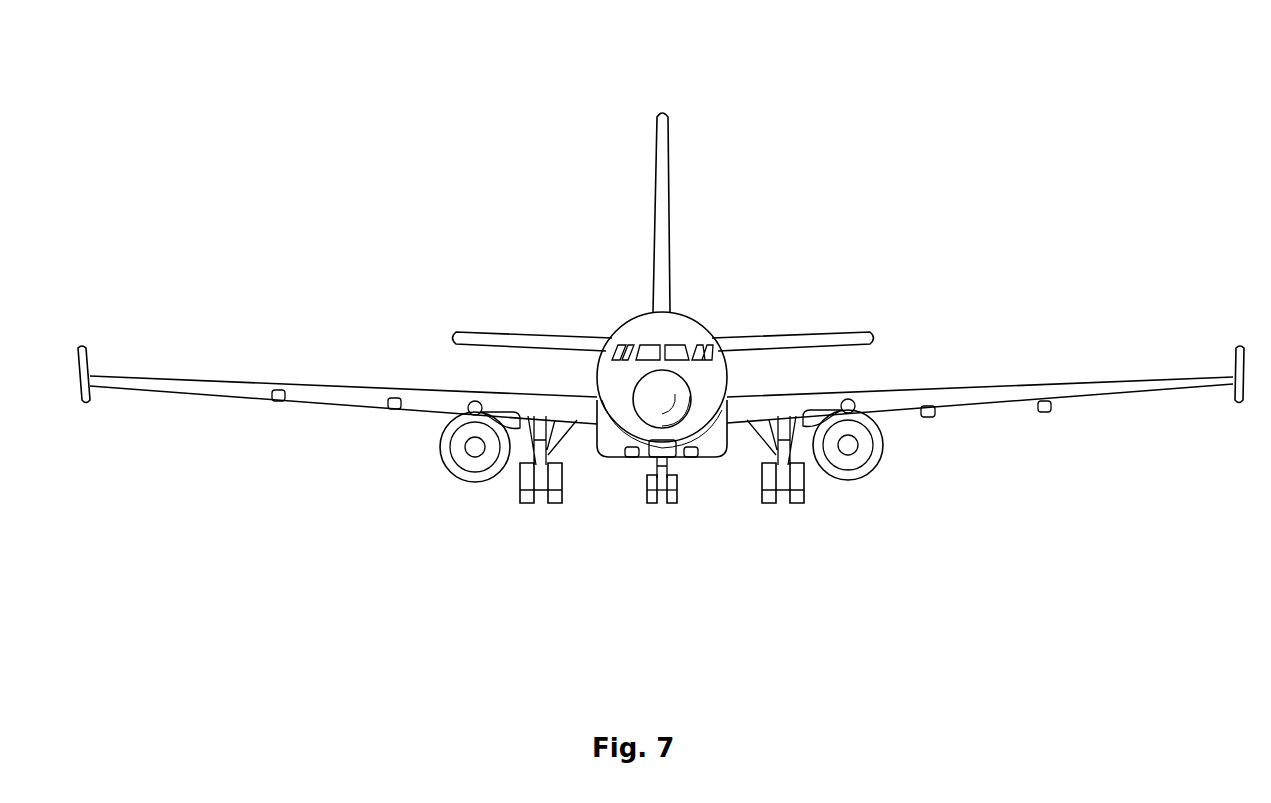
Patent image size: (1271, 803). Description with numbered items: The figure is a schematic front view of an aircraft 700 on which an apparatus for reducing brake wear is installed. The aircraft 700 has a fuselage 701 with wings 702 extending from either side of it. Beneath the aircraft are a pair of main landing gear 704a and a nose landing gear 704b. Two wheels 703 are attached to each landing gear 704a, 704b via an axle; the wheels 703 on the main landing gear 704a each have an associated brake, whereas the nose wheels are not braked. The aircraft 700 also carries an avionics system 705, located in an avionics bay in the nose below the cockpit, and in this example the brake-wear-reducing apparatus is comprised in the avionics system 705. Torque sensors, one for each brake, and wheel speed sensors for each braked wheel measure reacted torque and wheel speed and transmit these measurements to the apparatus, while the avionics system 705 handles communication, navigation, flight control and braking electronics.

The aircraft 700 is at (434, 95).
The fuselage 701 is at (686, 327).
The wings 702 is at (952, 397).
The wheels 703 is at (775, 500).
The main landing gear 704a is at (562, 478).
The nose landing gear 704b is at (668, 490).
The avionics system 705 is at (651, 392).